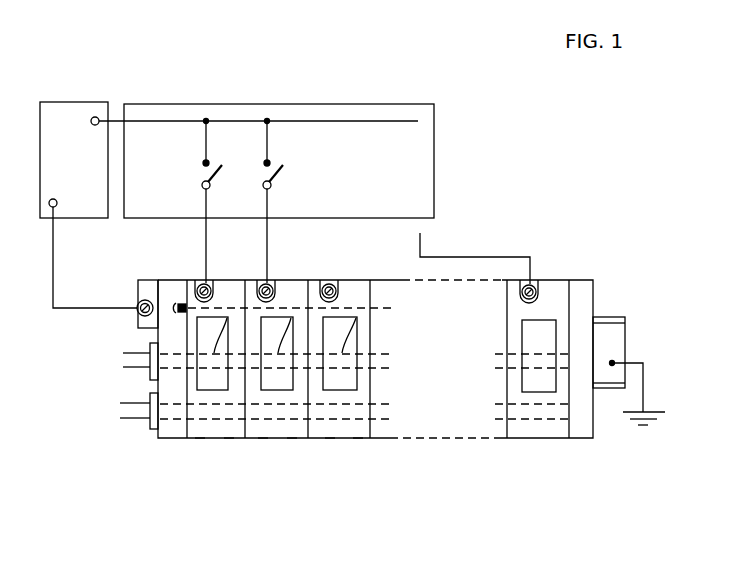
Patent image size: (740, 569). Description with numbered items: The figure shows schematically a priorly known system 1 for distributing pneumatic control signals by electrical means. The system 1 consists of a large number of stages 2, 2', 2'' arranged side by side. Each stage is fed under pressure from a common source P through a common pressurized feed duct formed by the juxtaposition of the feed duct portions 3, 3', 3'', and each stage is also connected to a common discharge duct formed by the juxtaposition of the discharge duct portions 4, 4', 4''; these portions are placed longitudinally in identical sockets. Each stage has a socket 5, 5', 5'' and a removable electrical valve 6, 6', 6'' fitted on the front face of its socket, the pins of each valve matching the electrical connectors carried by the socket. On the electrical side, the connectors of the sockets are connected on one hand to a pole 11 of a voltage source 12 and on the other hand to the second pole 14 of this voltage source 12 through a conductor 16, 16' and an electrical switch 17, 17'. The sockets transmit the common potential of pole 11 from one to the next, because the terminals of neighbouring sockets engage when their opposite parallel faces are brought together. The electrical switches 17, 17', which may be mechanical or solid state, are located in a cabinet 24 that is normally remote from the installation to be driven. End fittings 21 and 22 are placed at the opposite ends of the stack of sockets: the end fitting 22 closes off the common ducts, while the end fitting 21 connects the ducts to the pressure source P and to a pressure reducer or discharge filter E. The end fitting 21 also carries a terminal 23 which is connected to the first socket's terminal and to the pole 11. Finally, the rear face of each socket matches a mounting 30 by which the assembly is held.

The system for distributing pneumatic control signals by electrical means 1 is at (652, 351).
The stage 2 is at (212, 401).
The stage 2' is at (275, 401).
The stage 2'' is at (324, 401).
The feed duct portion 3 is at (203, 463).
The feed duct portion 3' is at (269, 463).
The feed duct portion 3'' is at (336, 463).
The discharge duct portion 4 is at (233, 302).
The discharge duct portion 4' is at (298, 302).
The discharge duct portion 4'' is at (364, 302).
The socket 5 is at (231, 463).
The socket 5' is at (298, 463).
The socket 5'' is at (365, 463).
The electrical valve 6 is at (213, 321).
The electrical valve 6' is at (278, 321).
The electrical valve 6'' is at (343, 321).
The pole of voltage source 11 is at (56, 201).
The voltage source 12 is at (66, 103).
The second pole of voltage source 14 is at (93, 125).
The conductor 16 is at (186, 236).
The conductor 16' is at (287, 236).
The electrical switch 17 is at (188, 155).
The electrical switch 17' is at (295, 155).
The end fitting 21 is at (158, 439).
The end fitting 22 is at (587, 447).
The terminal 23 is at (139, 304).
The cabinet 24 is at (190, 104).
The mounting 30 is at (605, 335).